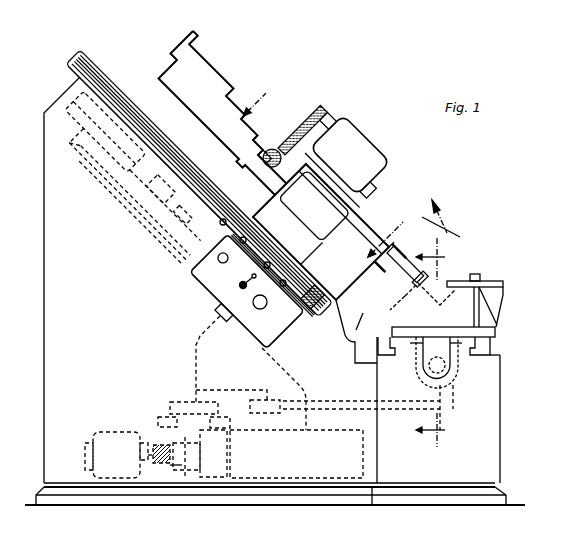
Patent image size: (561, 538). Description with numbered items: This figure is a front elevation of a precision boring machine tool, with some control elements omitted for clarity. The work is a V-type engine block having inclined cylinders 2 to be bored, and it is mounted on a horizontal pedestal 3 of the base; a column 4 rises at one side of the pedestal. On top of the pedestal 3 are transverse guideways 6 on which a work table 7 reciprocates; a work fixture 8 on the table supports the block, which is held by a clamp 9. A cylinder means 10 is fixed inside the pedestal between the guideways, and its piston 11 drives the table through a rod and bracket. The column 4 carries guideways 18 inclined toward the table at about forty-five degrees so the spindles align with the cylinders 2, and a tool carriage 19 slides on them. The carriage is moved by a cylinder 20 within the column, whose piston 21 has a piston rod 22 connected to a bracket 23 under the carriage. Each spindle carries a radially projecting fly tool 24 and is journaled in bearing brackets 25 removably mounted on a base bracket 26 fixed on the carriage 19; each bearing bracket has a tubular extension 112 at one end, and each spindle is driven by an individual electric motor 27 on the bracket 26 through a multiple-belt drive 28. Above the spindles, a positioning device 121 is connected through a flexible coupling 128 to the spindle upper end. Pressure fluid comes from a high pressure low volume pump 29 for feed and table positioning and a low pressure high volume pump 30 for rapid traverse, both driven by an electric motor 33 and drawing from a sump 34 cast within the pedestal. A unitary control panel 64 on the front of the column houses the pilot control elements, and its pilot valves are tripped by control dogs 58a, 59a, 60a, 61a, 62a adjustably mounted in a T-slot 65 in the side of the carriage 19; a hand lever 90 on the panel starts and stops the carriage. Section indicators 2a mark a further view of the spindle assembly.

The cylinders 2 is at (404, 302).
The section line 2a- 2a is at (328, 173).
The pedestal 3 is at (500, 405).
The column 4 is at (55, 296).
The guideways 6 is at (492, 340).
The work slide or table 7 is at (495, 333).
The work fixture 8 is at (506, 297).
The clamp 9 is at (482, 282).
The cylinder means 10 is at (456, 366).
The piston 11 is at (405, 259).
The guideways 18 is at (342, 338).
The tool slide or carriage 19 is at (112, 78).
The cylinder 20 is at (75, 103).
The piston 21 is at (90, 158).
The piston rod 22 is at (145, 222).
The bracket 23 is at (183, 212).
The fly tool 24 is at (406, 265).
The bearings 25 is at (372, 298).
The base bracket 26 is at (360, 212).
The electric motor 27 is at (362, 136).
The multiple-belt drive 28 is at (297, 114).
The high pressure low volume pump 29 is at (228, 450).
The low pressure high volume pump 30 is at (177, 467).
The electric motor 33 is at (105, 432).
The sump or reservoir 34 is at (290, 478).
The control dog 58a is at (285, 281).
The control dog 59a is at (326, 258).
The control dog 60a is at (227, 224).
The control dog 61a is at (270, 266).
The control dog 62a is at (247, 242).
The control panel 64 is at (207, 286).
The T-slot 65 is at (165, 162).
The hand lever 90 is at (242, 282).
The tubular extension 112 is at (397, 268).
The positioning device 121 is at (233, 84).
The flexible coupling 128 is at (275, 146).